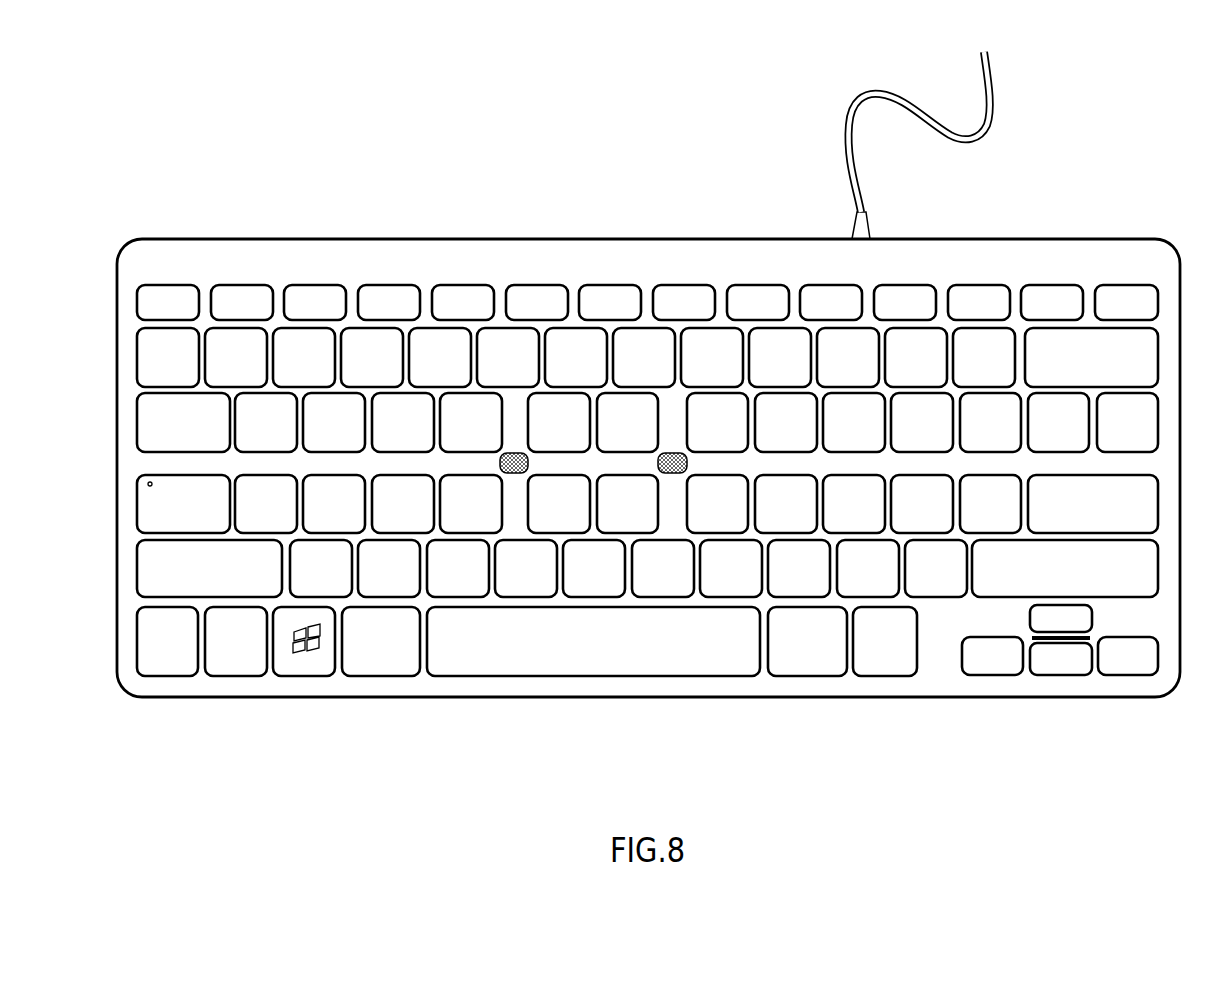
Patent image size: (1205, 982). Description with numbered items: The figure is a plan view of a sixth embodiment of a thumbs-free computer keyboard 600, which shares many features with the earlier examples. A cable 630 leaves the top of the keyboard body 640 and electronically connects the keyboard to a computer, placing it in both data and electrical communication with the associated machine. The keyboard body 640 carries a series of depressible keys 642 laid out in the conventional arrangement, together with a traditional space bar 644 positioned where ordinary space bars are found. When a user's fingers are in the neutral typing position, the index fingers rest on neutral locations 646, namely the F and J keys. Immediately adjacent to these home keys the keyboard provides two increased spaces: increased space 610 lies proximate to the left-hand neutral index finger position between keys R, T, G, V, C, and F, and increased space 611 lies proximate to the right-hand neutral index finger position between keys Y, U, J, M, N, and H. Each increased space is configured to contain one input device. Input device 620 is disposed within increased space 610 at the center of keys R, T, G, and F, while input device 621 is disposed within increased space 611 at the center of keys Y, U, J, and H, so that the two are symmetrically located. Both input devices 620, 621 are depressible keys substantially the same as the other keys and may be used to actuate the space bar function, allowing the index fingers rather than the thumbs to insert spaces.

The thumbs-free computer keyboard 600 is at (268, 210).
The cable 630 is at (855, 163).
The keyboard body 640 is at (1042, 252).
The increased space 610 is at (480, 464).
The increased space 611 is at (710, 466).
The input device 620 is at (528, 465).
The input device 621 is at (658, 464).
The depressible keys 642 is at (302, 586).
The space bar 644 is at (565, 665).
The neutral locations 646 is at (456, 520).